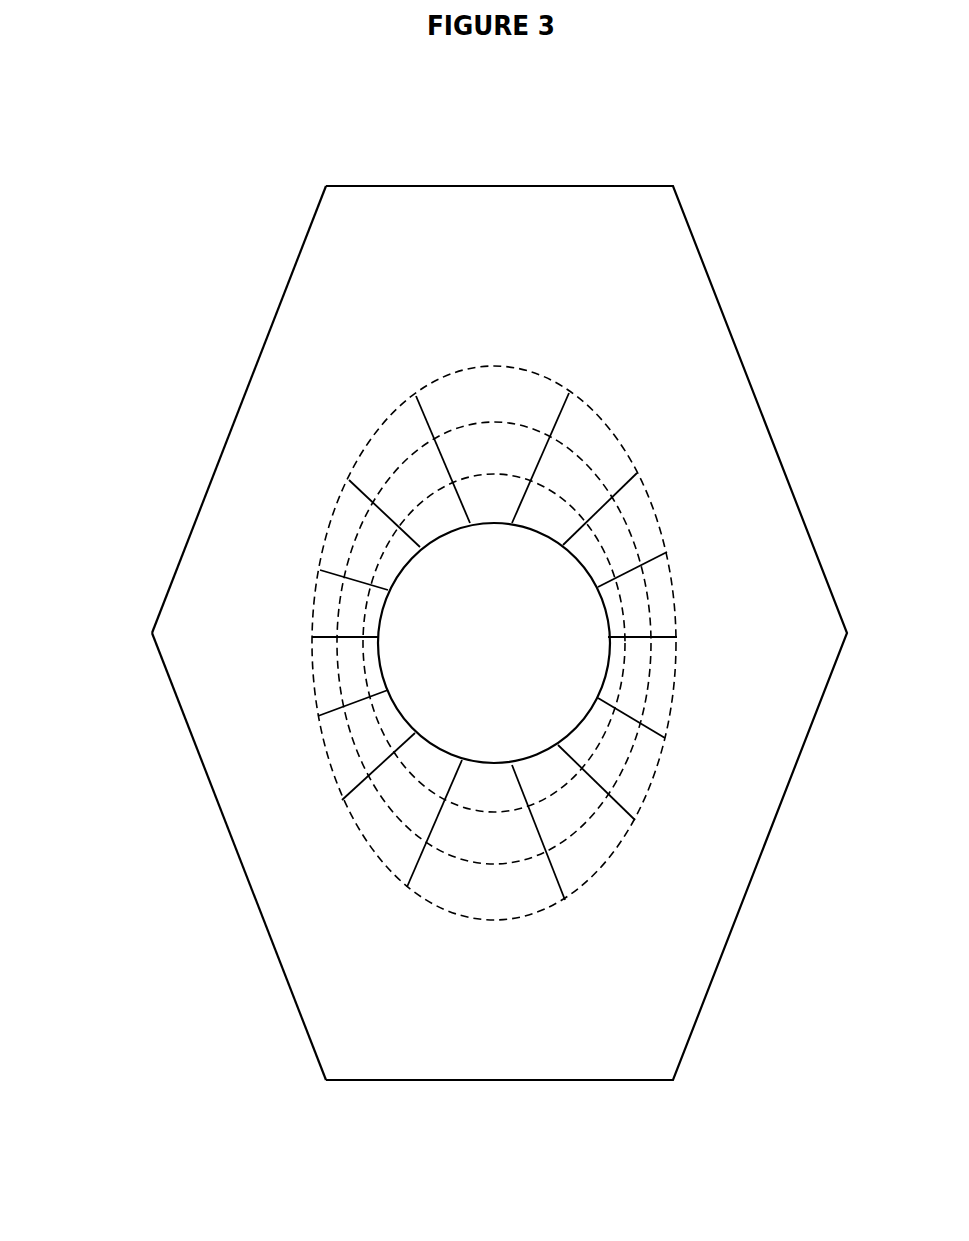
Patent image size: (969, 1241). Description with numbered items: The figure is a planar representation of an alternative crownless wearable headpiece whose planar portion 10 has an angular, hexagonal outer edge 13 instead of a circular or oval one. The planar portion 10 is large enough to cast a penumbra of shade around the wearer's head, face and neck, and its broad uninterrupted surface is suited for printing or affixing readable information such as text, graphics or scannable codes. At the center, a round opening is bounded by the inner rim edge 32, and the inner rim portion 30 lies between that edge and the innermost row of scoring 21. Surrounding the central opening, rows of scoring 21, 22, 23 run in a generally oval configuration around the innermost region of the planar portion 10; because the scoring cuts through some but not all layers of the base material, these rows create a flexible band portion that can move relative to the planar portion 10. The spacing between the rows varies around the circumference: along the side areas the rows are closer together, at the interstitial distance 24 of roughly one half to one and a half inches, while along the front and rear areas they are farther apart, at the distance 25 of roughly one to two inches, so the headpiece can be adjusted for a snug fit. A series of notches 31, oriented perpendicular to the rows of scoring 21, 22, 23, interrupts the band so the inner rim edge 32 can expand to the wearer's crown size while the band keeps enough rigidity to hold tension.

The planar portion 10 is at (579, 633).
The outer edge of the planar portion 13 is at (273, 878).
The row of scoring 21 is at (622, 692).
The row of scoring 22 is at (637, 733).
The row of scoring 23 is at (640, 813).
The interstitial distance along the side areas 24 is at (377, 648).
The interstitial distance along the front and rear areas 25 is at (502, 507).
The inner rim portion 30 is at (442, 752).
The notch 31 is at (543, 842).
The inner rim edge 32 is at (396, 710).